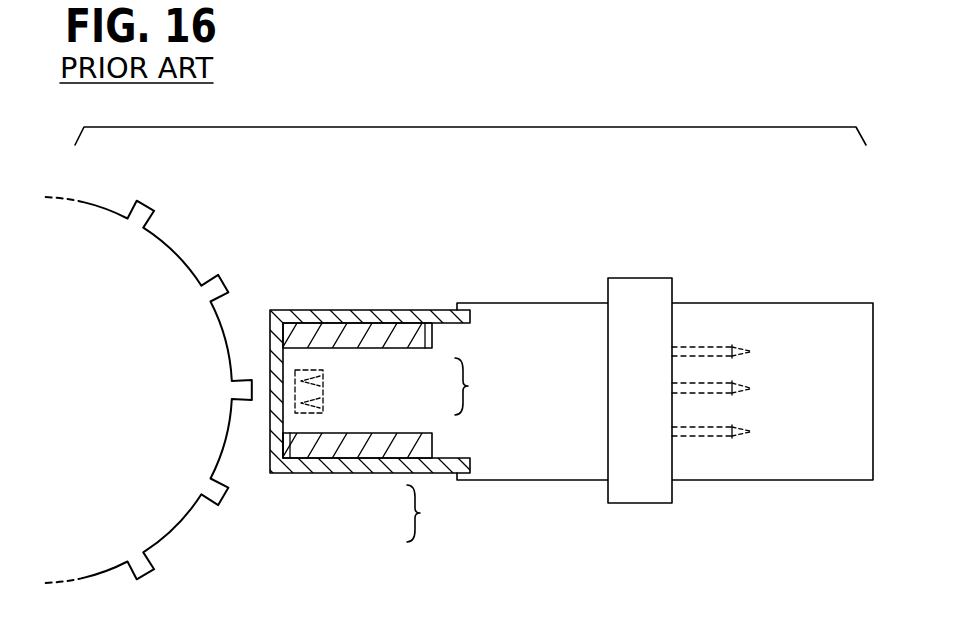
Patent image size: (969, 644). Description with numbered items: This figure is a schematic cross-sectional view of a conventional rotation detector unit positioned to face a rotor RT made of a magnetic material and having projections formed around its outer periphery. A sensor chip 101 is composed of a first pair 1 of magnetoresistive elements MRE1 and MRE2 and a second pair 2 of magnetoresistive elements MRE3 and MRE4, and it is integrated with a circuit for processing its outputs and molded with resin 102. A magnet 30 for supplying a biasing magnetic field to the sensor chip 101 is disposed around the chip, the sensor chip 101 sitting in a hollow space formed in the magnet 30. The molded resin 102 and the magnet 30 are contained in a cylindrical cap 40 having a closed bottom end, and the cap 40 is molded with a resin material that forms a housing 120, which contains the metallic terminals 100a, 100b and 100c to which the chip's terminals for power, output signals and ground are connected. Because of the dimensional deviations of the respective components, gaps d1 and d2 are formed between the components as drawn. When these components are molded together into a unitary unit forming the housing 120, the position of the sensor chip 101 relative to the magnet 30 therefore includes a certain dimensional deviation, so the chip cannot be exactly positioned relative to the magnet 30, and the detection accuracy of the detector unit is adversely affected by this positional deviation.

The cylindrical cap 40 is at (290, 310).
The magnet 30 is at (355, 332).
The rotor RT is at (168, 538).
The housing 120 is at (652, 504).
The metallic terminal 100a is at (750, 351).
The metallic terminal 100b is at (750, 388).
The metallic terminal 100c is at (750, 431).
The sensor chip 101 is at (273, 407).
The molded resin 102 is at (293, 430).
The magnetoresistive element MRE1 is at (323, 379).
The magnetoresistive element MRE2 is at (323, 402).
The magnetoresistive element MRE3 is at (320, 415).
The magnetoresistive element MRE4 is at (298, 422).
The pair of magnetoresistive elements 1 is at (471, 386).
The pair of magnetoresistive elements 2 is at (422, 513).
The gap d1 is at (430, 347).
The gap d2 is at (437, 460).